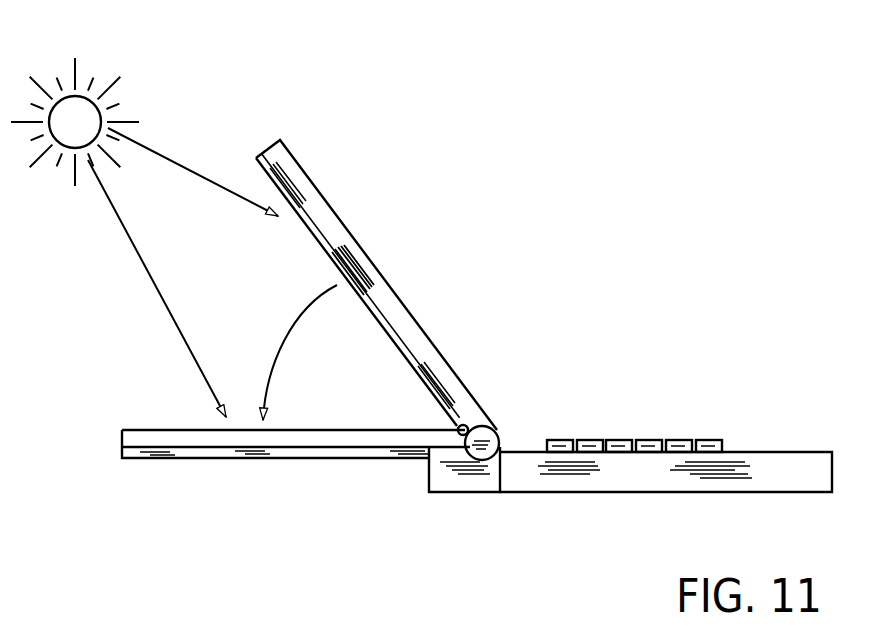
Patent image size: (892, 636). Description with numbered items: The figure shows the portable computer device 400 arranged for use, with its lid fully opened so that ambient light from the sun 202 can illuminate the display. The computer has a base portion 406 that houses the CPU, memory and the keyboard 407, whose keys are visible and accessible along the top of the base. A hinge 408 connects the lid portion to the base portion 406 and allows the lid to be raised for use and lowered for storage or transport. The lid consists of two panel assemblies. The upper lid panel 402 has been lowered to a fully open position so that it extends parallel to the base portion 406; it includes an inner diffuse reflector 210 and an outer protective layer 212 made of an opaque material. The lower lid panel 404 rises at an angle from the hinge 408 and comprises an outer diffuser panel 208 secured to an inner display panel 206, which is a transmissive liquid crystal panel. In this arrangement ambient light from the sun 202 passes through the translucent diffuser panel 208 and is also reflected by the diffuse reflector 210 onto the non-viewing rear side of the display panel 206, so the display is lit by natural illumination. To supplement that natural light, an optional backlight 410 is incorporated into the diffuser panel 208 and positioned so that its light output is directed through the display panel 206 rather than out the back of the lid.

The sun 202 is at (78, 97).
The display panel 206 is at (380, 219).
The diffuser panel 208 is at (322, 246).
The diffuse reflector 210 is at (183, 431).
The outer protective layer 212 is at (215, 462).
The portable computer device 400 is at (629, 286).
The upper lid panel 402 is at (256, 444).
The lower lid panel 404 is at (352, 264).
The base portion 406 is at (680, 493).
The keyboard 407 is at (672, 440).
The hinge 408 is at (498, 444).
The backlight 410 is at (468, 425).